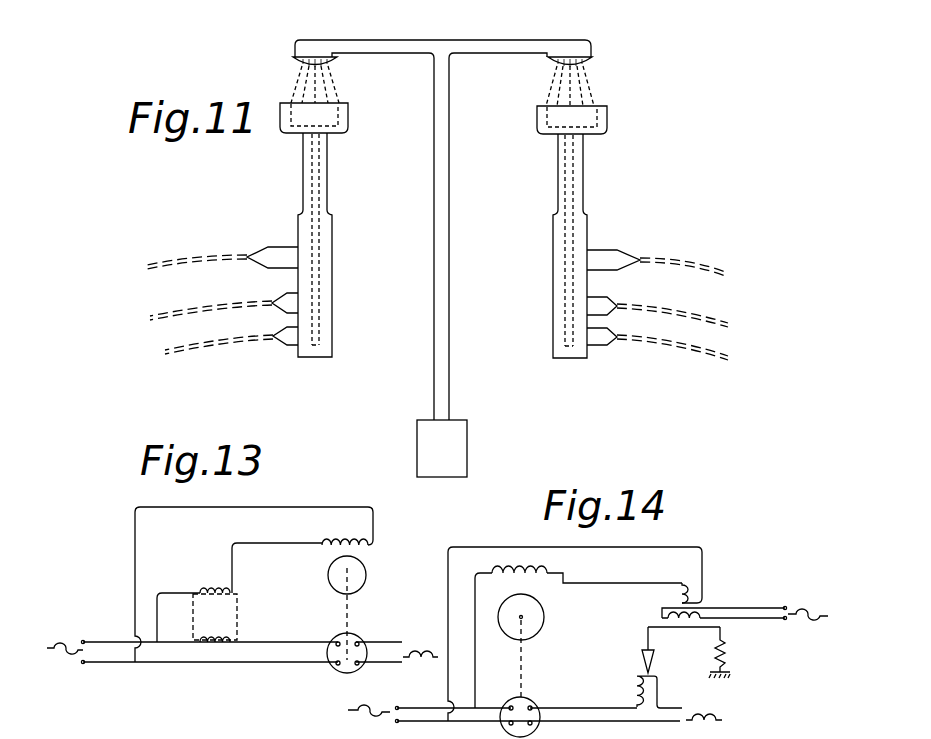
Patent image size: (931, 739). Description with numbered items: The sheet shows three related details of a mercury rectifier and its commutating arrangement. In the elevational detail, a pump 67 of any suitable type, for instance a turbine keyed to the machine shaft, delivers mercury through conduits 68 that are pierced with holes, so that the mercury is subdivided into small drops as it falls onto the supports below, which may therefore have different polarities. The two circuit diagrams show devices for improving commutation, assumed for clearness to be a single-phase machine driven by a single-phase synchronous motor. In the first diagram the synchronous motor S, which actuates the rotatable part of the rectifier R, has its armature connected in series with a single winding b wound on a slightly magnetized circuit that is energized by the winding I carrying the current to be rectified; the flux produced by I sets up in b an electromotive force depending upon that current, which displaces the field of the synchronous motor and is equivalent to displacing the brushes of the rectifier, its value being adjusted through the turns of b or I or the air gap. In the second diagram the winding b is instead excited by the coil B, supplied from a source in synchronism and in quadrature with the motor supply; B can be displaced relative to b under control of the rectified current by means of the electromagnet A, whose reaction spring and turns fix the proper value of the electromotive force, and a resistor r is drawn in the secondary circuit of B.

In FIG. 11, the conduit 68 is at (315, 56).
In FIG. 11, the pump 67 is at (420, 435).
In FIG. 13, the synchronous motor S is at (300, 553).
In FIG. 14, the synchronous motor S is at (519, 560).
In FIG. 13, the winding b is at (193, 603).
In FIG. 14, the winding b is at (688, 583).
In FIG. 13, the winding I is at (215, 618).
In FIG. 13, the rectifier R is at (348, 644).
In FIG. 14, the rectifier R is at (520, 705).
In FIG. 14, the coil B is at (734, 634).
In FIG. 14, the resistor r is at (724, 652).
In FIG. 14, the electromagnet A is at (648, 692).